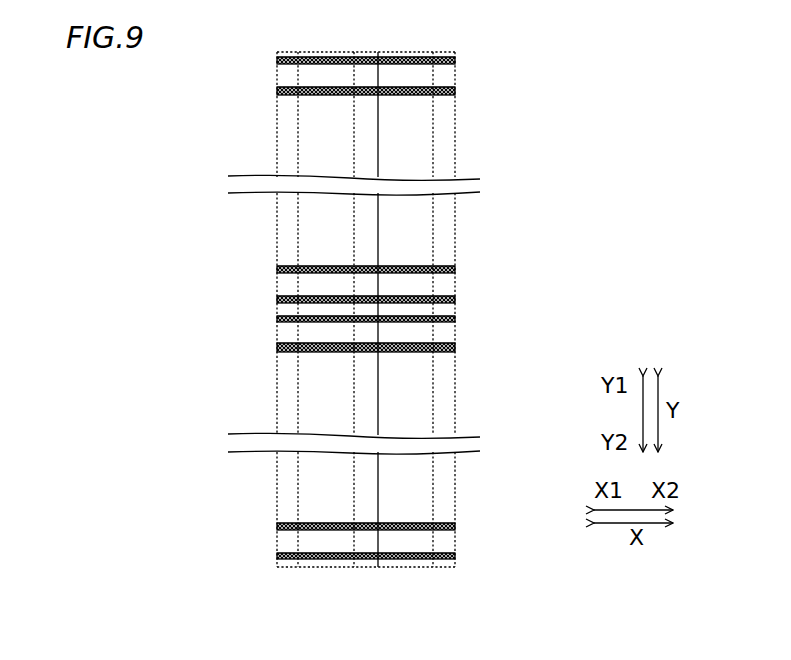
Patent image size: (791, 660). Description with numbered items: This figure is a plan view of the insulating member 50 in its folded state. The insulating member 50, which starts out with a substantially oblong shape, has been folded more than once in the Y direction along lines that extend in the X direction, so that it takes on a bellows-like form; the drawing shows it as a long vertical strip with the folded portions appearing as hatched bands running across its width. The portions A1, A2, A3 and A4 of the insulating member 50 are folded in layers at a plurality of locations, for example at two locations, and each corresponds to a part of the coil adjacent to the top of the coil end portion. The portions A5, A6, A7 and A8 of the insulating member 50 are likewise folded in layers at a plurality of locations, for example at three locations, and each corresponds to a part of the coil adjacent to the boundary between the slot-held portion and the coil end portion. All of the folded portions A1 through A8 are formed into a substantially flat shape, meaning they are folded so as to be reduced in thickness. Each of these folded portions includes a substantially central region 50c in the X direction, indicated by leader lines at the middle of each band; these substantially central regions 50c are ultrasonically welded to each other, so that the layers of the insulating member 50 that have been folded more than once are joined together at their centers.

The insulating member 50 is at (567, 82).
The substantially central region 50c is at (372, 57).
The portion A1 is at (455, 60).
The portion A2 is at (455, 300).
The portion A3 is at (455, 319).
The portion A4 is at (455, 556).
The portion A5 is at (455, 90).
The portion A6 is at (455, 270).
The portion A7 is at (455, 349).
The portion A8 is at (455, 527).